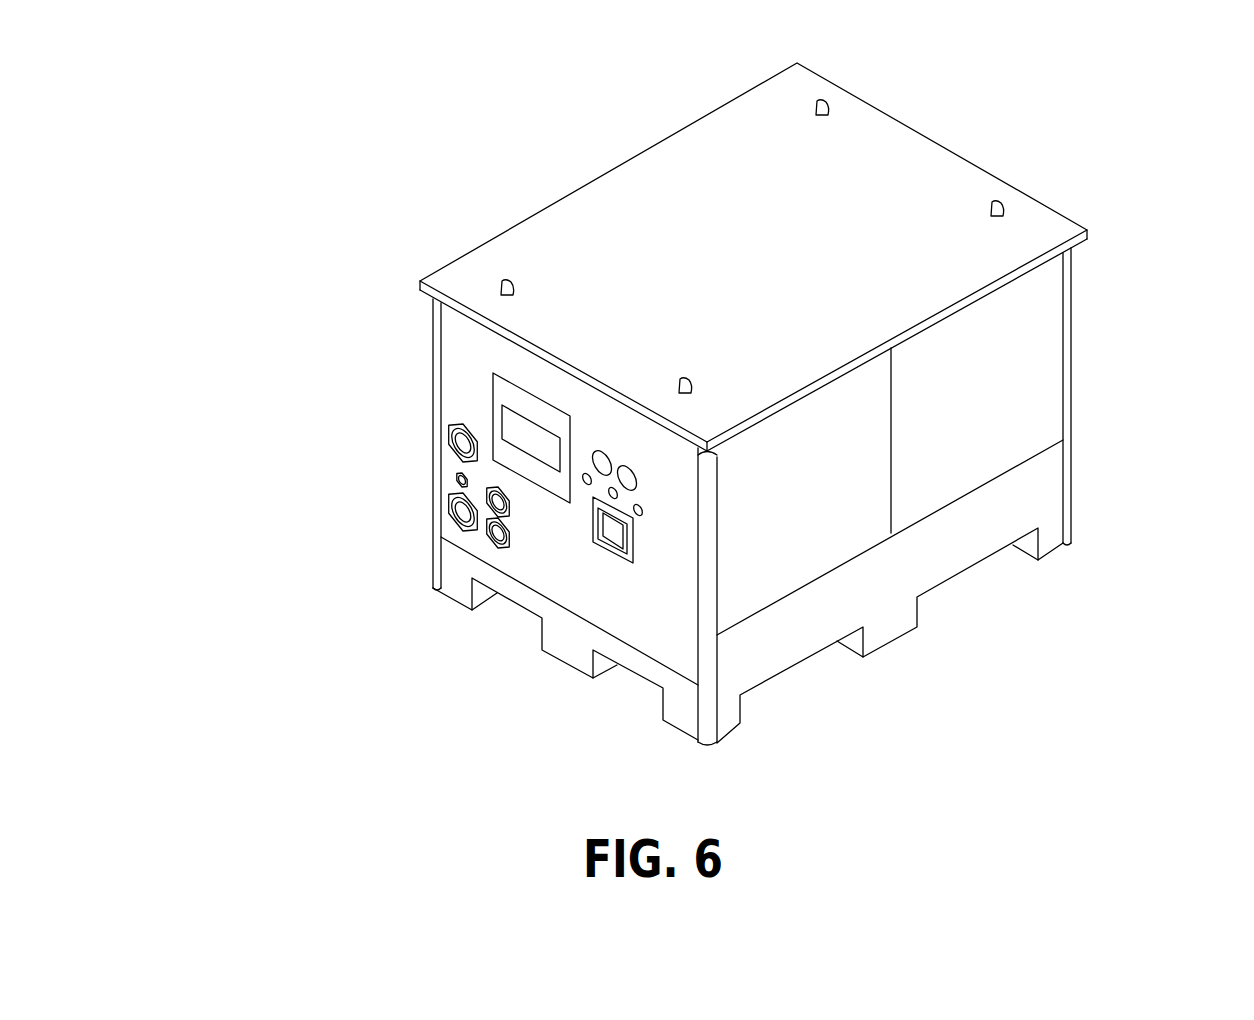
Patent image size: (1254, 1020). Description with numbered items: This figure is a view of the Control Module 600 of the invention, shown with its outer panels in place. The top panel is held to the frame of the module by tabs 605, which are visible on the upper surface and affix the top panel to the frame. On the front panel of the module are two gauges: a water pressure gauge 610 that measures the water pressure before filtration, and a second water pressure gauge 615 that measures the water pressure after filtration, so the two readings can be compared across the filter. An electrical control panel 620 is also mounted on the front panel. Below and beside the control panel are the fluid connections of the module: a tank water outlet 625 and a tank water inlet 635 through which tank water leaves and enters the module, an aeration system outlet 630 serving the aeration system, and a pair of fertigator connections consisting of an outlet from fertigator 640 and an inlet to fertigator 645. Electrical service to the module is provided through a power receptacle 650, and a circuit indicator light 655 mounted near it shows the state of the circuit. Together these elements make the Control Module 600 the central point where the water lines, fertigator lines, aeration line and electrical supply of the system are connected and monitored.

The Control Module 600 is at (867, 868).
The tabs 605 is at (836, 109).
The water pressure gauge 610 is at (627, 465).
The water pressure gauge 615 is at (598, 451).
The electrical control panel 620 is at (503, 412).
The tank water outlet 625 is at (447, 443).
The aeration system outlet 630 is at (452, 483).
The tank water inlet 635 is at (455, 519).
The outlet from fertigator 640 is at (497, 549).
The inlet to fertigator 645 is at (512, 514).
The power receptacle 650 is at (626, 541).
The circuit indicator light 655 is at (648, 510).